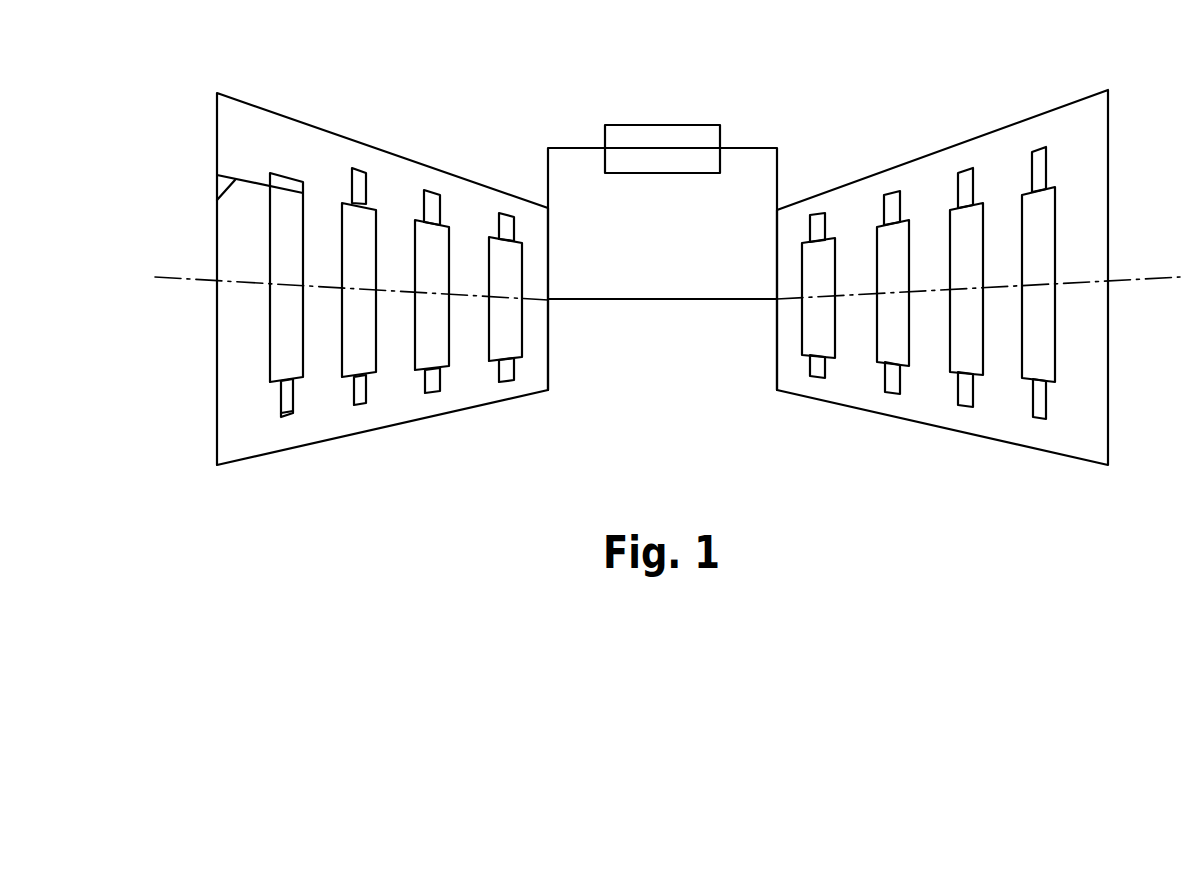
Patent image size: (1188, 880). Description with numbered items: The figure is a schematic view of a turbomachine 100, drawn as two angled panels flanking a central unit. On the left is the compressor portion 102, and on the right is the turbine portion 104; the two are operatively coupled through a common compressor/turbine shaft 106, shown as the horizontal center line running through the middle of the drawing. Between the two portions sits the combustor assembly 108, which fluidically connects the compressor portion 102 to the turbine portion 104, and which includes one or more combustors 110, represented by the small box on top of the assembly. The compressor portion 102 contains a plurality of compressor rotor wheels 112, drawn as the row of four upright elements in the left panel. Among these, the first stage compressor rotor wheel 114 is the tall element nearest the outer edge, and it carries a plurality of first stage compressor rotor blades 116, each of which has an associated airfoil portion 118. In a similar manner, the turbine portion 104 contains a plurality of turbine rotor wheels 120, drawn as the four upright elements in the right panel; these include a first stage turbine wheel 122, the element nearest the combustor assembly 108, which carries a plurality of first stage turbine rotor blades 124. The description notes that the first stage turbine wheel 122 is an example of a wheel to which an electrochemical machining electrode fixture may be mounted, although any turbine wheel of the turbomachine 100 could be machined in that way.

The turbomachine 100 is at (404, 66).
The compressor portion 102 is at (250, 478).
The turbine portion 104 is at (1018, 472).
The common compressor/turbine shaft 106 is at (638, 300).
The combustor assembly 108 is at (651, 197).
The combustor 110 is at (662, 123).
The compressor rotor wheel 112 is at (265, 346).
The first stage compressor rotor wheel 114 is at (278, 353).
The first stage compressor rotor blade 116 is at (245, 427).
The airfoil portion 118 is at (287, 412).
The turbine rotor wheel 120 is at (1088, 421).
The first stage turbine wheel 122 is at (832, 291).
The first stage turbine rotor blade 124 is at (817, 223).